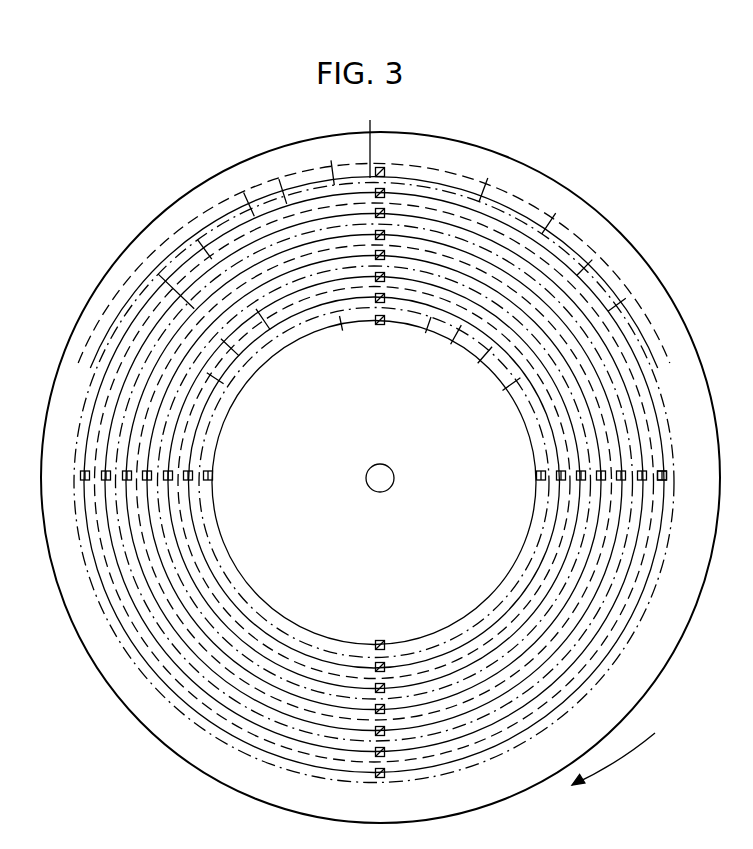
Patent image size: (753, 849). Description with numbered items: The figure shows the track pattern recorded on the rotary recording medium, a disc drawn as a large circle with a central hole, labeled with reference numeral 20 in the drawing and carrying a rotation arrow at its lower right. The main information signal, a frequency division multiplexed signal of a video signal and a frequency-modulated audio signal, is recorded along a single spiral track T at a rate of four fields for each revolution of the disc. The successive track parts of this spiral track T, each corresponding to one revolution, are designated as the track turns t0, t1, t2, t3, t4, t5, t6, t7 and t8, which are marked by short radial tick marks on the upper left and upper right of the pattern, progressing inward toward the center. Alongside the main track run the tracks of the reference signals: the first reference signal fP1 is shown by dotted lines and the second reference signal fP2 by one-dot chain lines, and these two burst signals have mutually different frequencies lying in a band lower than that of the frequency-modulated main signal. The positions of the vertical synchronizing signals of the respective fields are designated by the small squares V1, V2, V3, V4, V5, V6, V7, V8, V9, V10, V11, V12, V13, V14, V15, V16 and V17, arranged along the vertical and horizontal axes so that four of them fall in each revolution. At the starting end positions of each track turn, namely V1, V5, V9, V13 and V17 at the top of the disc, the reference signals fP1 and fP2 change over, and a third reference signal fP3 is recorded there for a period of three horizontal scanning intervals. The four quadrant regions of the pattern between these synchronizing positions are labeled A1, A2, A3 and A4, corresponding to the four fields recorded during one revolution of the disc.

The optical disk 20 is at (688, 324).
The vertical synchronizing signal position V1 is at (386, 170).
The vertical synchronizing signal position V2 is at (81, 477).
The vertical synchronizing signal position V3 is at (380, 779).
The vertical synchronizing signal position V4 is at (667, 477).
The vertical synchronizing signal position V5 is at (387, 193).
The vertical synchronizing signal position V6 is at (103, 481).
The vertical synchronizing signal position V7 is at (375, 711).
The vertical synchronizing signal position V8 is at (645, 481).
The vertical synchronizing signal position V9 is at (387, 214).
The vertical synchronizing signal position V10 is at (123, 473).
The vertical synchronizing signal position V11 is at (375, 690).
The vertical synchronizing signal position V12 is at (664, 471).
The vertical synchronizing signal position V13 is at (387, 236).
The vertical synchronizing signal position V14 is at (145, 481).
The vertical synchronizing signal position V15 is at (375, 668).
The vertical synchronizing signal position V16 is at (559, 472).
The vertical synchronizing signal position V17 is at (387, 256).
The disk sector A1 is at (128, 333).
The disk sector A2 is at (128, 621).
The disk sector A3 is at (622, 626).
The disk sector A4 is at (640, 341).
The first reference signal fP1 is at (96, 345).
The second reference signal fP2 is at (101, 378).
The third reference signal fP3 is at (363, 138).
The spiral track T is at (198, 240).
The track turn t0 is at (487, 176).
The track turn t1 is at (417, 199).
The track turn t2 is at (465, 211).
The track turn t3 is at (434, 243).
The track turn t4 is at (324, 336).
The track turn t5 is at (374, 351).
The track turn t6 is at (341, 359).
The track turn t7 is at (319, 370).
The track turn t8 is at (337, 342).